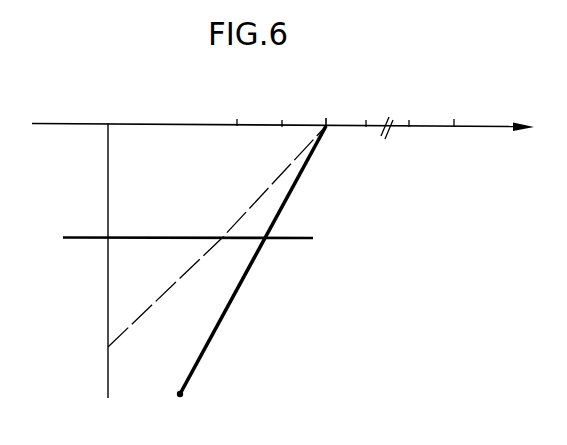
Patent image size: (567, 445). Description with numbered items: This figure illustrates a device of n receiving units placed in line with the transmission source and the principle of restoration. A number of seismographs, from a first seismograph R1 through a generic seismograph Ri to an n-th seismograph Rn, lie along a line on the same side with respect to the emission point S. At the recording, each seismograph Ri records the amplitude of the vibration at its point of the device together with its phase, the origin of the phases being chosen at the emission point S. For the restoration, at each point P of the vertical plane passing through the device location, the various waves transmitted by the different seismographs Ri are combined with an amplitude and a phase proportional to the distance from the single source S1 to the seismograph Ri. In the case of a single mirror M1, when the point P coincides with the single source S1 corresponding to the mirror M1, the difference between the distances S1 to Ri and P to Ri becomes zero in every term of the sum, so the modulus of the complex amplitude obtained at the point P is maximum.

The emission point S is at (105, 248).
The first seismograph R1 is at (232, 112).
The seismograph Ri is at (324, 112).
The n-th seismograph Rn is at (458, 112).
The mirror M1 is at (174, 234).
The single source S1 is at (206, 239).
The point P(x,y) P is at (251, 271).